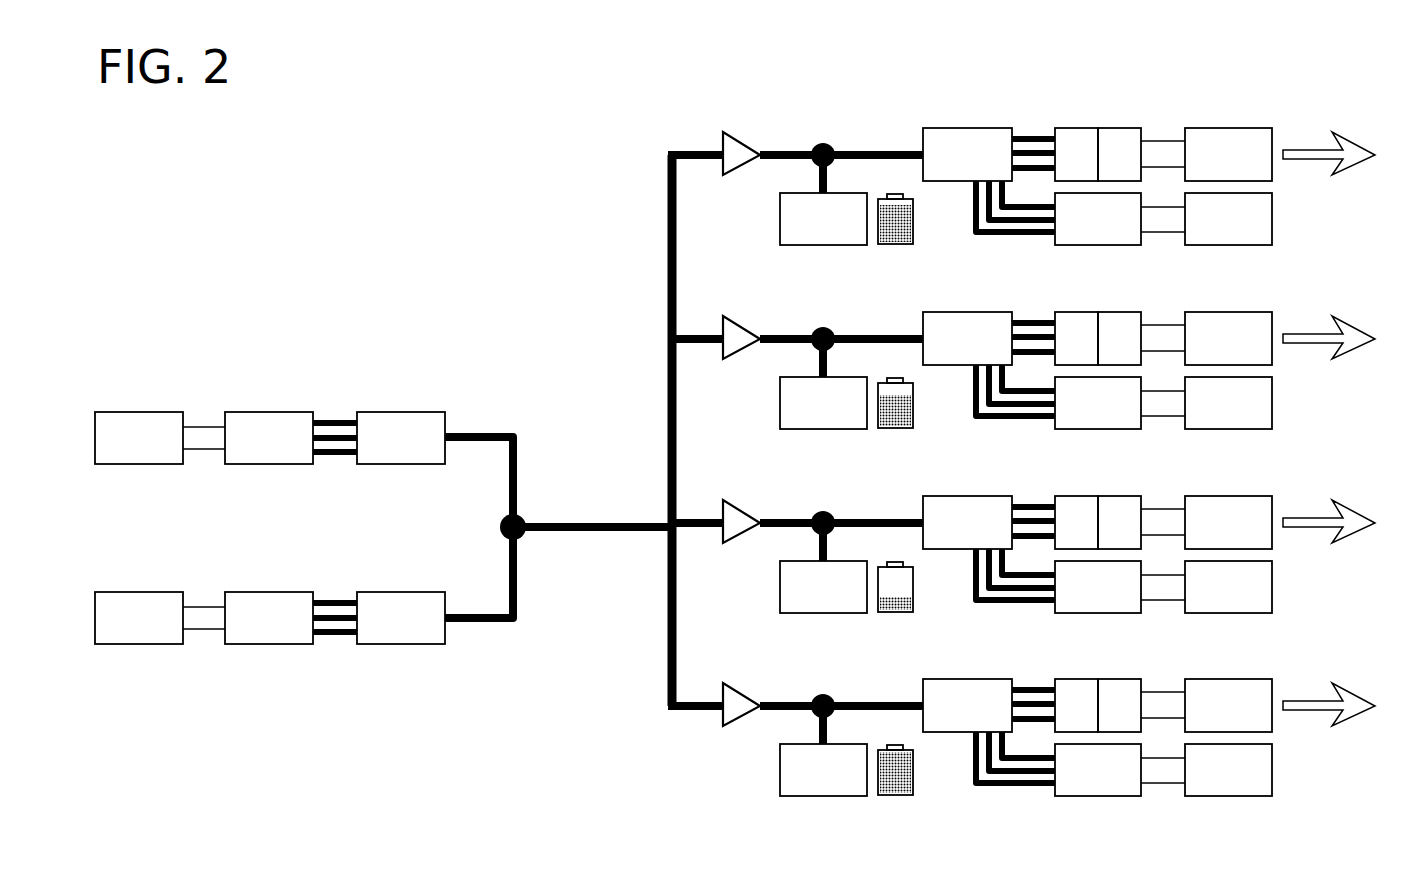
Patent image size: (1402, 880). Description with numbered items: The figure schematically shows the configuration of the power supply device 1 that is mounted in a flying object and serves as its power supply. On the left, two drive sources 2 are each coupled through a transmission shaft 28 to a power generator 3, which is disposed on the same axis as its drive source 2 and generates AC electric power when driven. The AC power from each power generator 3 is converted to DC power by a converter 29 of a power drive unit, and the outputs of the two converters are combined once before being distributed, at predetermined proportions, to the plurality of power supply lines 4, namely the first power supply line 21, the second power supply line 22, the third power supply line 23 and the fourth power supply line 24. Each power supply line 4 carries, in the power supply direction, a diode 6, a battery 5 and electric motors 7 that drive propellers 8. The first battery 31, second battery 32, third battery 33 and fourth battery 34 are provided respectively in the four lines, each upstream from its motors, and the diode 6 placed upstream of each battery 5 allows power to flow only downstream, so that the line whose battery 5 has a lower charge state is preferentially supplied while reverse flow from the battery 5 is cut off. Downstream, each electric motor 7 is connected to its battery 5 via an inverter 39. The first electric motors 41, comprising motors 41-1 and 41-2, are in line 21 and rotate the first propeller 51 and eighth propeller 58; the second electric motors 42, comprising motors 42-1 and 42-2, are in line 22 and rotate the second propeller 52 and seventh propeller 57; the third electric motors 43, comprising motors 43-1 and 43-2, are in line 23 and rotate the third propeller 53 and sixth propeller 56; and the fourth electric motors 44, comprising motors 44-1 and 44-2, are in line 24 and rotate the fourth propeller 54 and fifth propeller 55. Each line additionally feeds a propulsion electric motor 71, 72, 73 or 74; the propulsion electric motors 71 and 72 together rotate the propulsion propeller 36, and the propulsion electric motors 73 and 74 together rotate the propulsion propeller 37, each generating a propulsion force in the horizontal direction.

The power supply device 1 is at (408, 170).
The drive source 2 is at (138, 412).
The power generator 3 is at (268, 412).
The transmission shaft 28 is at (204, 426).
The converter 29 is at (400, 412).
The power supply line 4 is at (878, 146).
The battery 5 is at (823, 206).
The diode 6 is at (744, 140).
The electric motor 7 is at (1097, 109).
The propeller 8 is at (1266, 115).
The first power supply line 21 is at (694, 150).
The second power supply line 22 is at (694, 334).
The third power supply line 23 is at (694, 518).
The fourth power supply line 24 is at (694, 701).
The first battery 31 is at (822, 247).
The second battery 32 is at (822, 431).
The third battery 33 is at (822, 615).
The fourth battery 34 is at (822, 798).
The propulsion propeller 36 is at (1228, 247).
The propulsion propeller 37 is at (1228, 615).
The inverter 39 is at (967, 127).
The first electric motor 41 is at (1097, 125).
The first electric motor 41-1 is at (1077, 128).
The first electric motor 41-2 is at (1148, 136).
The second electric motor 42 is at (1097, 309).
The second electric motor 42-1 is at (1077, 312).
The second electric motor 42-2 is at (1118, 312).
The third electric motor 43 is at (1097, 493).
The third electric motor 43-1 is at (1077, 496).
The third electric motor 43-2 is at (1118, 496).
The fourth electric motor 44 is at (1097, 676).
The fourth electric motor 44-1 is at (1077, 679).
The fourth electric motor 44-2 is at (1118, 679).
The first propeller 51 is at (1266, 137).
The eighth propeller 58 is at (1229, 122).
The second propeller 52 is at (1266, 321).
The seventh propeller 57 is at (1238, 312).
The third propeller 53 is at (1266, 505).
The sixth propeller 56 is at (1238, 496).
The fourth propeller 54 is at (1266, 688).
The fifth propeller 55 is at (1238, 679).
The propulsion electric motor 71 is at (1098, 247).
The propulsion electric motor 72 is at (1098, 431).
The propulsion electric motor 73 is at (1098, 615).
The propulsion electric motor 74 is at (1098, 798).